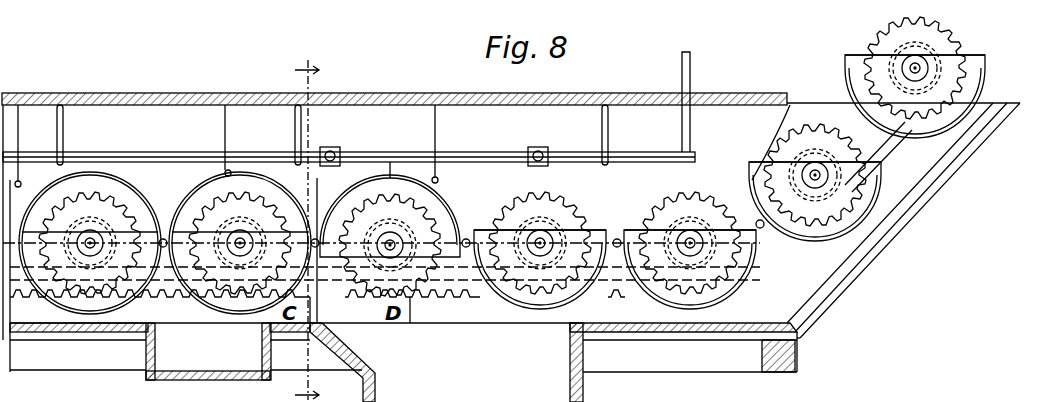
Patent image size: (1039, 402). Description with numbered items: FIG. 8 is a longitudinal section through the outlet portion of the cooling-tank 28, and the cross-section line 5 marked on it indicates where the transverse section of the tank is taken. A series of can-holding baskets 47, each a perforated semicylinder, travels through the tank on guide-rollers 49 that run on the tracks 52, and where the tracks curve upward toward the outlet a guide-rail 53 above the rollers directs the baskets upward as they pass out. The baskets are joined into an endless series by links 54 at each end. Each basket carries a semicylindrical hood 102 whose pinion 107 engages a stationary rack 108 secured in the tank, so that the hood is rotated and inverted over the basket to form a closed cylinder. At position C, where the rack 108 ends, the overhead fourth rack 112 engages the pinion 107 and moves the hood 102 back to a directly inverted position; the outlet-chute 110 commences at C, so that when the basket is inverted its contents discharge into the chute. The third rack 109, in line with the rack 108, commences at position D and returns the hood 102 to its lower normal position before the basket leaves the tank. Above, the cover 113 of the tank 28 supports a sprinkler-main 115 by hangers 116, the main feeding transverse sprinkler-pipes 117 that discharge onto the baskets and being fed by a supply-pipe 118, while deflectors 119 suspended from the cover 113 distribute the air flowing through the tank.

The section line 5 5 is at (314, 216).
The cooling-tank 28 is at (650, 334).
The can-holding basket 47 is at (592, 187).
The guide-roller 49 is at (843, 370).
The tracks in the cooling-tank 52 is at (893, 147).
The guide-rail 53 is at (738, 200).
The link 54 is at (464, 230).
The hood 102 is at (186, 196).
The pinion 107 is at (590, 198).
The stationary rack 108 is at (160, 306).
The third rack 109 is at (485, 306).
The outlet-chute 110 is at (295, 362).
The fourth rack 112 is at (353, 242).
The top or cover of the tank 113 is at (578, 107).
The sprinkler-main 115 is at (462, 153).
The hanger 116 is at (100, 130).
The sprinkler-pipe 117 is at (340, 150).
The supply-pipe 118 is at (692, 60).
The deflector 119 is at (222, 135).